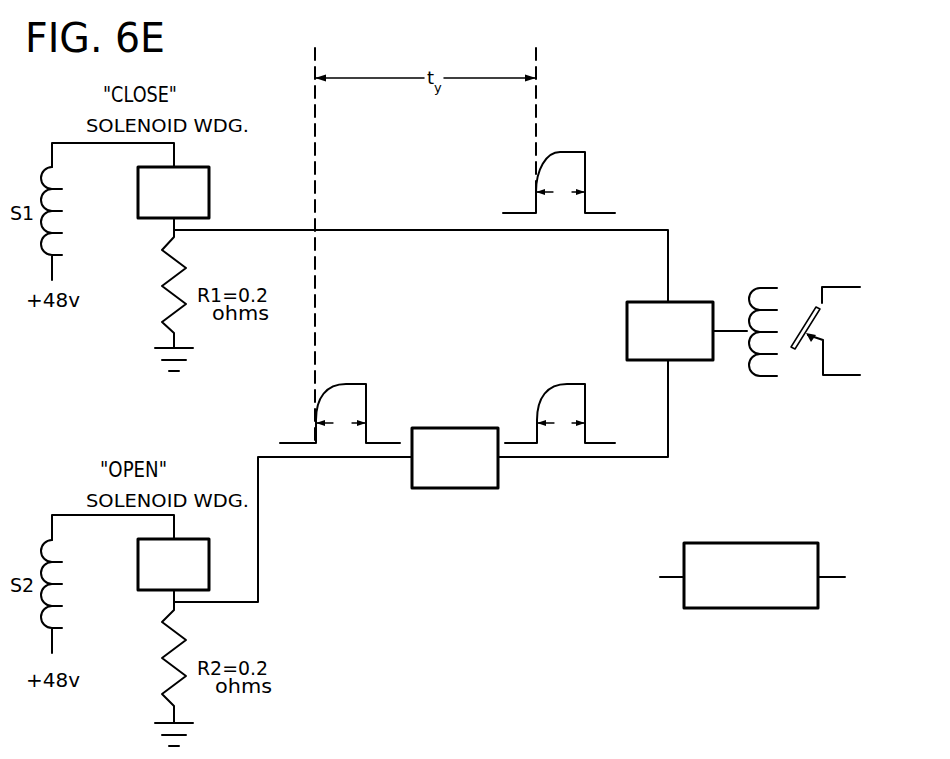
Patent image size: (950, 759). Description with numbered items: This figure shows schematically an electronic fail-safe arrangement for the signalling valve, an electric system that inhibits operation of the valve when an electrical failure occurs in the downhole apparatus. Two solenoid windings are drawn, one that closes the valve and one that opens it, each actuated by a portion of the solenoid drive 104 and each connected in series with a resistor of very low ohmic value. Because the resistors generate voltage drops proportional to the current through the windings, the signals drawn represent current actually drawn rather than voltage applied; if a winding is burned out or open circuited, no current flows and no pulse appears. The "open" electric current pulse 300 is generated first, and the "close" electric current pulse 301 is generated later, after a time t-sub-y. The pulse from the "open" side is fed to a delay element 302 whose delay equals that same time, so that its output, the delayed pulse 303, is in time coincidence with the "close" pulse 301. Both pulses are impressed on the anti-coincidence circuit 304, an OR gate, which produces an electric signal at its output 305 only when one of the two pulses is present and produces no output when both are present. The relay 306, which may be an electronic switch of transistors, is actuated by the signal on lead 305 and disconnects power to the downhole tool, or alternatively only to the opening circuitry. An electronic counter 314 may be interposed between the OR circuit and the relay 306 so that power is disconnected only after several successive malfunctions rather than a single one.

The solenoid drive 104 is at (195, 378).
The "open" electric current pulse 300 is at (368, 397).
The "close" electric current pulse 301 is at (588, 168).
The delay element 302 is at (487, 489).
The delayed pulse 303 is at (588, 397).
The anti-coincidence circuit 304 is at (627, 313).
The output lead 305 is at (738, 334).
The relay 306 is at (789, 368).
The electronic counter 314 is at (757, 543).